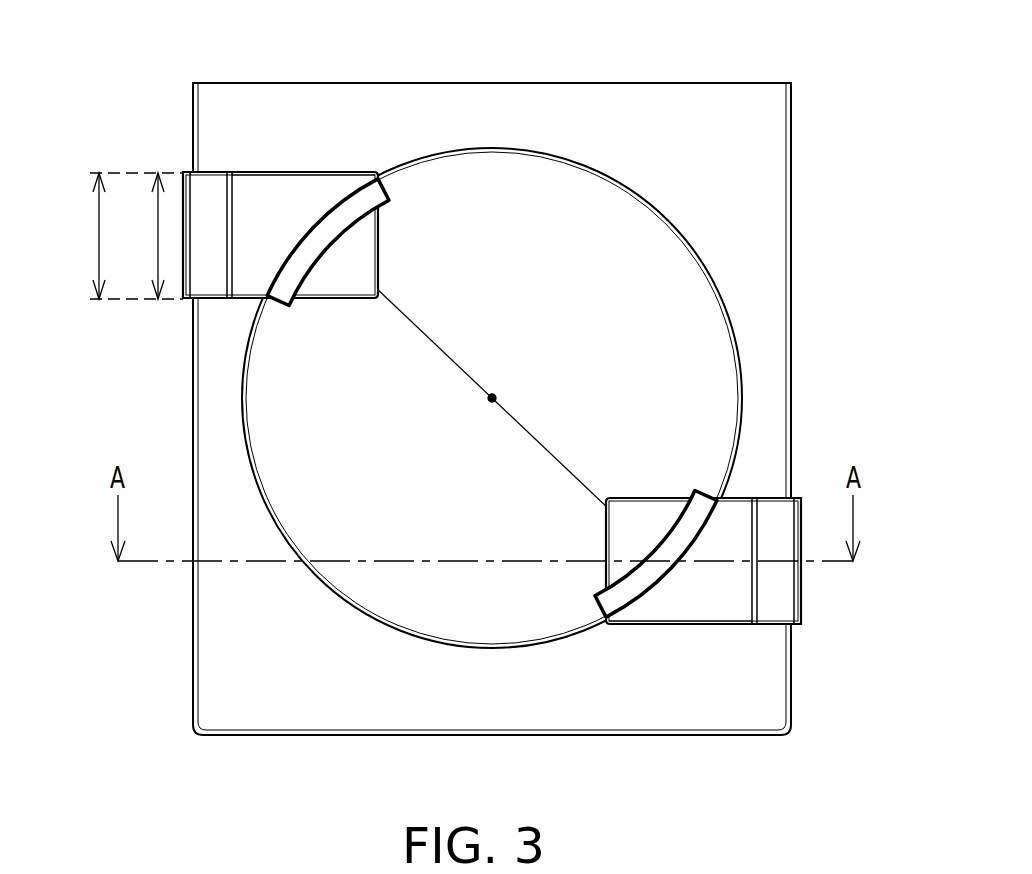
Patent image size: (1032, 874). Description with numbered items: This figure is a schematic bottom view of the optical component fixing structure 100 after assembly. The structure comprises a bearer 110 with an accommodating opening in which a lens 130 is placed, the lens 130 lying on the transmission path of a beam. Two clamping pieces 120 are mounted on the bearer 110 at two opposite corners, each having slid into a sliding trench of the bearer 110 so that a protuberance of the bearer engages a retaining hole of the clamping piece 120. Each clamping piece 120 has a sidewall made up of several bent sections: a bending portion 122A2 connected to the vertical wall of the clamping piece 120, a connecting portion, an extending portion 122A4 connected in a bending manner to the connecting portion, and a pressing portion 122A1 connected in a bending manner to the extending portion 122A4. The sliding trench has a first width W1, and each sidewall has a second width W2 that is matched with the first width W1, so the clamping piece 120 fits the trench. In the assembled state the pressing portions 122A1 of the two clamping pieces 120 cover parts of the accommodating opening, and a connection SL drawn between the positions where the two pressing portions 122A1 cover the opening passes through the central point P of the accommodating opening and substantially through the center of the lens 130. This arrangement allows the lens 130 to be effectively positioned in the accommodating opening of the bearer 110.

The optical component fixing structure 100 is at (147, 53).
The bearer 110 is at (807, 102).
The clamping piece 120 is at (183, 308).
The pressing portion 122A1 is at (357, 205).
The bending portion 122A2 is at (208, 190).
The extending portion 122A4 is at (267, 190).
The lens 130 is at (657, 262).
The central point P is at (494, 398).
The connection SL is at (600, 494).
The first width W1 is at (125, 236).
The second width W2 is at (143, 236).